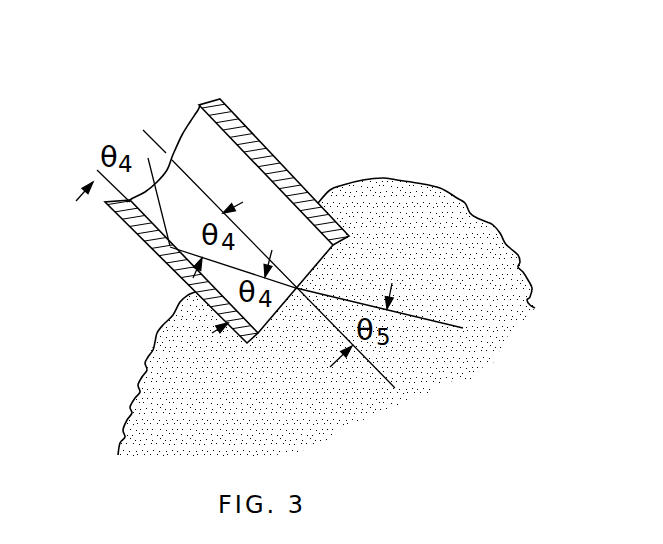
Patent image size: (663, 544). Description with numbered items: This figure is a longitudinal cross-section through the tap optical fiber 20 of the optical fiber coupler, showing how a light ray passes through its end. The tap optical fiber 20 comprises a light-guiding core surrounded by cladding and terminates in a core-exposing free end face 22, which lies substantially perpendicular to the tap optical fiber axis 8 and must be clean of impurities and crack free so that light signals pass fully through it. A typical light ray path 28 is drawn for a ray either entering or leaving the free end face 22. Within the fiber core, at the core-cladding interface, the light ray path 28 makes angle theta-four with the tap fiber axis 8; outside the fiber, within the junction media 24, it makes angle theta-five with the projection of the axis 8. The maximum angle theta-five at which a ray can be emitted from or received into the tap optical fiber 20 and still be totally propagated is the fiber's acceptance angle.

The tap optical fiber 20 is at (281, 129).
The free end face 22 is at (333, 247).
The junction media 24 is at (462, 213).
The light ray path 28 is at (147, 160).
The tap optical fiber axis 8 is at (392, 384).